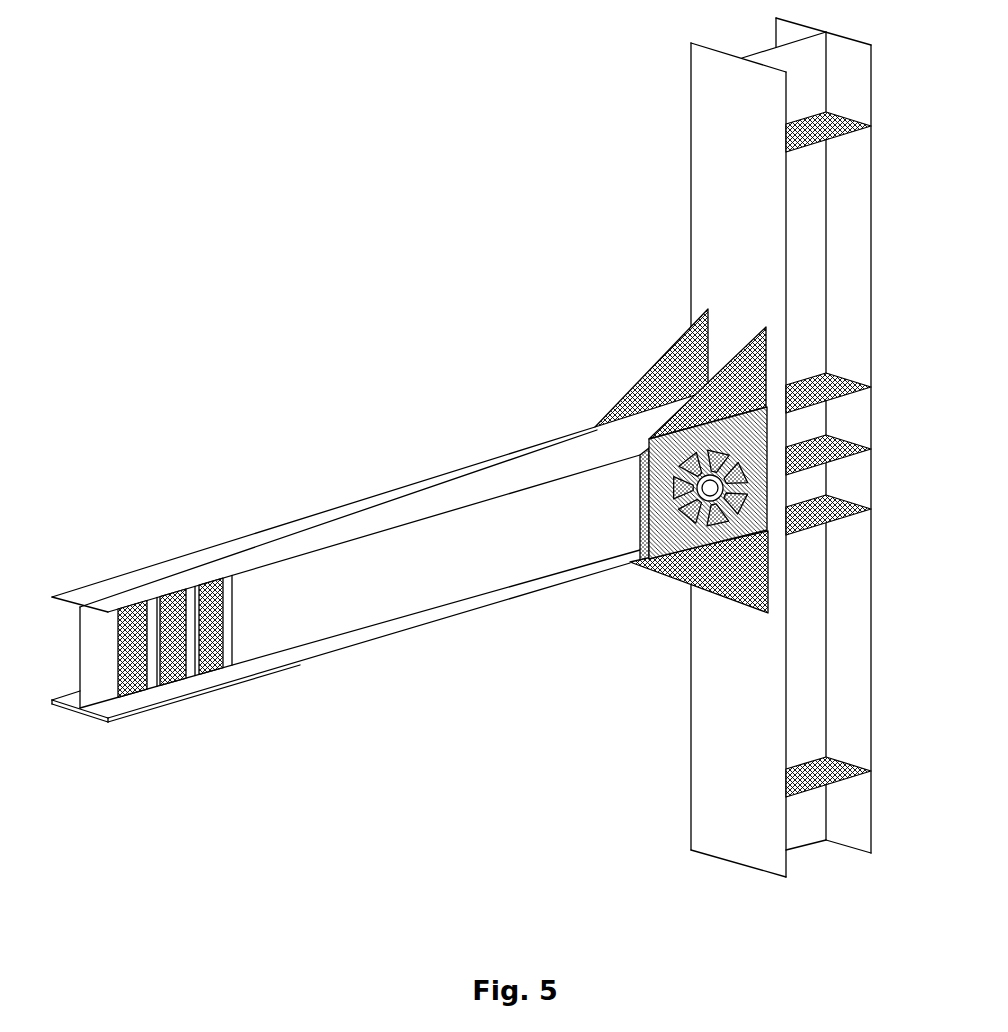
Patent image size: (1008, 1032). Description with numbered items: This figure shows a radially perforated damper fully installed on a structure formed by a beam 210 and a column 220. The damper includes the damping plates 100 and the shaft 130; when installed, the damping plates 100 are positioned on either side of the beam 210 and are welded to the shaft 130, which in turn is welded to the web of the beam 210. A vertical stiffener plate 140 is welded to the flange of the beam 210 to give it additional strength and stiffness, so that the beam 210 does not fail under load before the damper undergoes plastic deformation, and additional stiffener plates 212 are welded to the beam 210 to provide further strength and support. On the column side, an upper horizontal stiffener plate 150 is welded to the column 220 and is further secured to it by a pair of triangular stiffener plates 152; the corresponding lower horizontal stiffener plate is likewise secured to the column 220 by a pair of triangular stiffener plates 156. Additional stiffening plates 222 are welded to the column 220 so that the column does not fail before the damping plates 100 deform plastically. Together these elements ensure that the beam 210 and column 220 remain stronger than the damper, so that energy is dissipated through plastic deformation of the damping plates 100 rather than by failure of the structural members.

The damping plates 100 is at (594, 470).
The shaft 130 is at (648, 478).
The vertical stiffener plate 140 is at (717, 488).
The upper horizontal stiffener plate 150 is at (638, 427).
The triangular stiffener plates 152 is at (673, 368).
The triangular stiffener plates 156 is at (737, 578).
The beam 210 is at (276, 678).
The stiffener plates 212 is at (165, 673).
The column 220 is at (742, 878).
The stiffening plates 222 is at (824, 790).